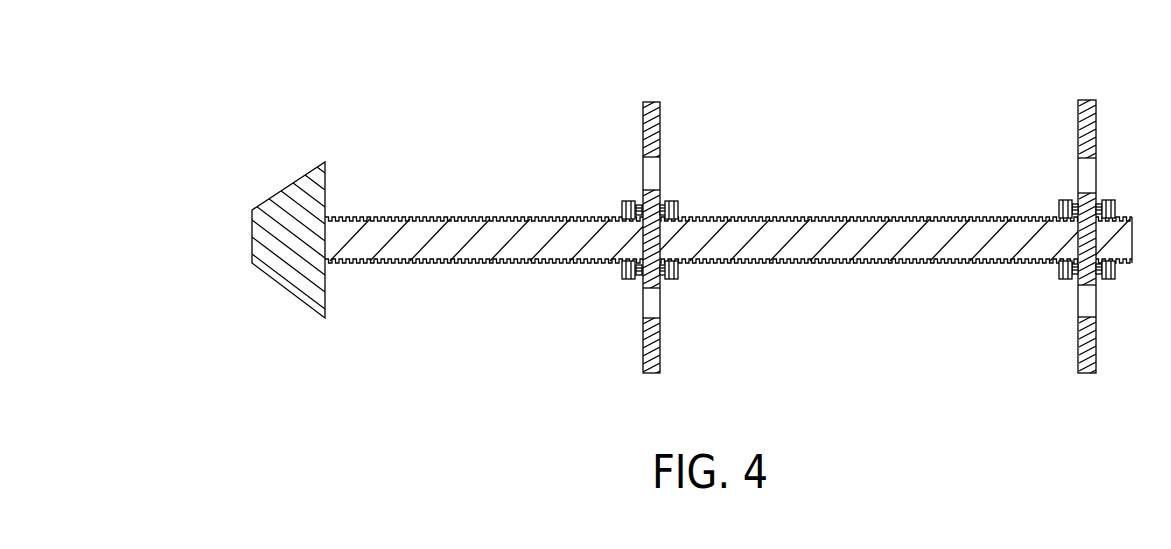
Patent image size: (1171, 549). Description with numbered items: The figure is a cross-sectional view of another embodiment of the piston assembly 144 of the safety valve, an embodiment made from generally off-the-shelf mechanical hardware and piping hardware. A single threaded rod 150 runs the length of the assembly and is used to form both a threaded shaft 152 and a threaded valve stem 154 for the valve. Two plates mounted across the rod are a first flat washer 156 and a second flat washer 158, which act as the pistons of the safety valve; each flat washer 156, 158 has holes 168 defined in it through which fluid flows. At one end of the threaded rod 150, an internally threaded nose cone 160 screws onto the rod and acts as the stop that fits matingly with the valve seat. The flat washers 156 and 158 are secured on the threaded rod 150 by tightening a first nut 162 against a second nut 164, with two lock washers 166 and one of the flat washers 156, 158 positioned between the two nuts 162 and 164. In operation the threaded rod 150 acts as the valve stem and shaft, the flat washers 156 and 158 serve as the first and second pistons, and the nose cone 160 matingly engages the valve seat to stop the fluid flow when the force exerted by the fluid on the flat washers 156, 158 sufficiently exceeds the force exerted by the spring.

The piston assembly 144 is at (432, 111).
The threaded rod 150 is at (838, 198).
The threaded shaft 152 is at (753, 243).
The threaded valve stem 154 is at (500, 263).
The first flat washer 156 is at (1097, 138).
The second flat washer 158 is at (642, 117).
The internally threaded nose cone 160 is at (288, 200).
The first nut 162 is at (623, 203).
The second nut 164 is at (673, 200).
The lock washers 166 is at (640, 208).
The holes 168 is at (655, 172).